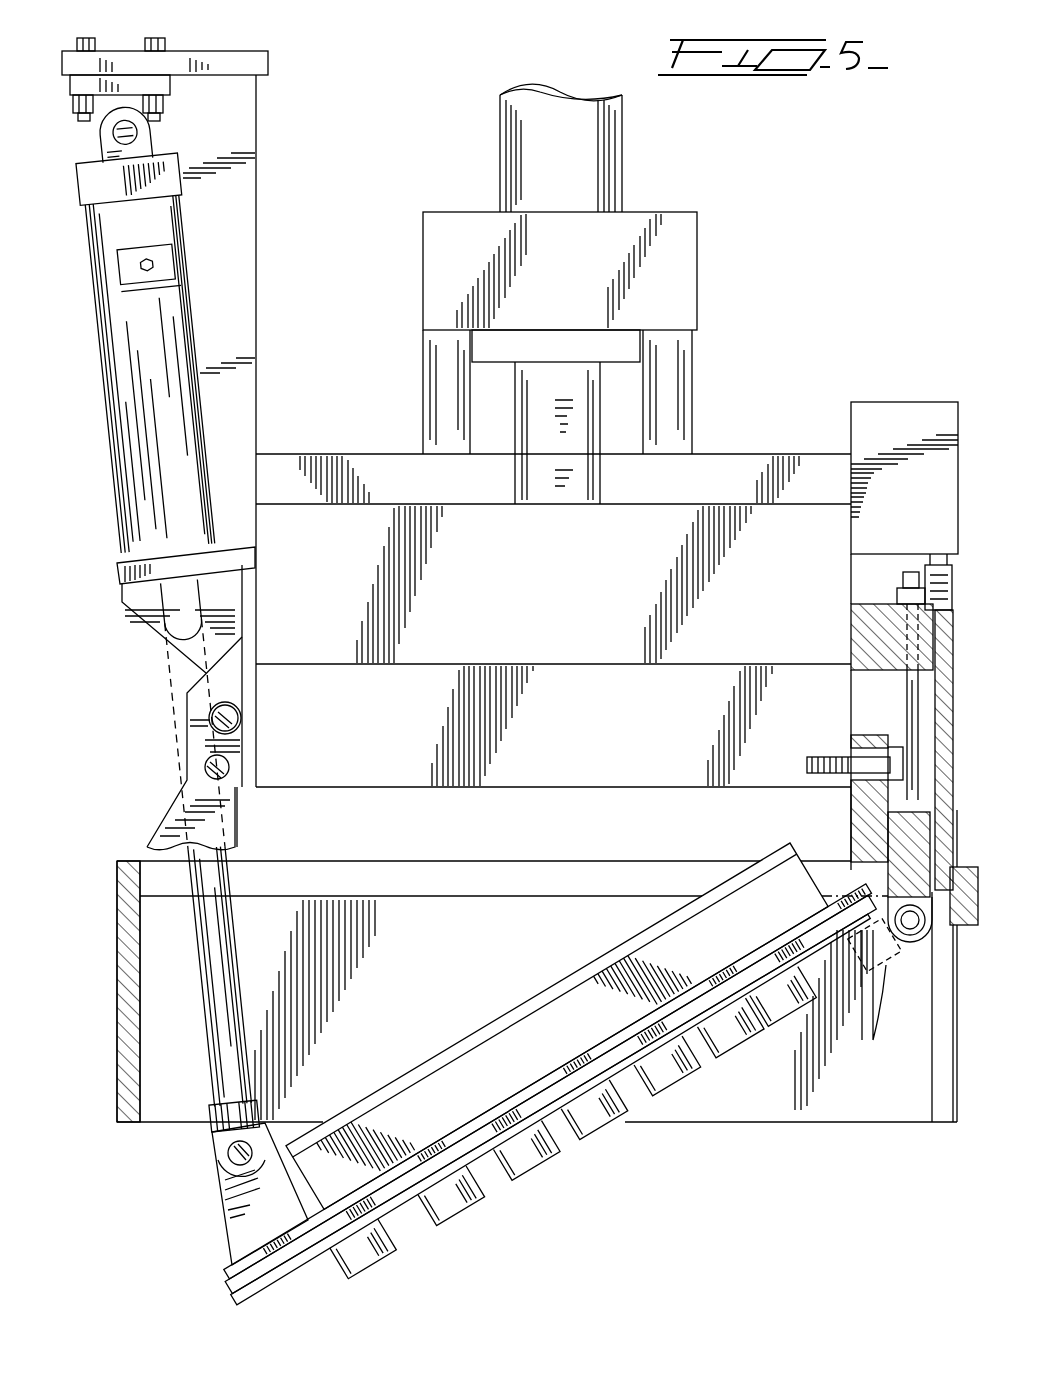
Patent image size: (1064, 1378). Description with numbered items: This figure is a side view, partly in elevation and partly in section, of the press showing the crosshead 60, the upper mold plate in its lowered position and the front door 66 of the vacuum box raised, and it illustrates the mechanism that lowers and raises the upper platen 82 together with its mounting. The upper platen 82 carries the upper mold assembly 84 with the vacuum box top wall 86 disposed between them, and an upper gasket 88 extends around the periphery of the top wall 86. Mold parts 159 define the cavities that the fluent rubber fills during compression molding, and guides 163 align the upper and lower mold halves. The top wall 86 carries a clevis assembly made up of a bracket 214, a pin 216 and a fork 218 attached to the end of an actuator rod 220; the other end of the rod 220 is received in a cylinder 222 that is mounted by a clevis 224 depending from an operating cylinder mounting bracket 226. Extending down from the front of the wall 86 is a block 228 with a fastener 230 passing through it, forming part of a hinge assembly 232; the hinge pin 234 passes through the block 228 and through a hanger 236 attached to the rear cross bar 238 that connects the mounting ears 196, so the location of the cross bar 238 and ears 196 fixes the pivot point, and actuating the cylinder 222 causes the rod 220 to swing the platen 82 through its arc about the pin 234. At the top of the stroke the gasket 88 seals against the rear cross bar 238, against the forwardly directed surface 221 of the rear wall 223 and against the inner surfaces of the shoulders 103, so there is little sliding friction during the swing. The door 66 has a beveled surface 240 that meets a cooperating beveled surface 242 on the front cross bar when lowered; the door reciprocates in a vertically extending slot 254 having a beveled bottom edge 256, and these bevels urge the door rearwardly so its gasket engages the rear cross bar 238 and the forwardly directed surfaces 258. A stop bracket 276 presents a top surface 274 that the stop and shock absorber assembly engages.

The crosshead 60 is at (569, 634).
The front door 66 is at (940, 706).
The upper platen 82 is at (488, 1068).
The upper mold assembly 84 is at (565, 1135).
The top wall 86 is at (250, 1300).
The upper gasket 88 is at (228, 1285).
The shoulders 103 is at (614, 872).
The mold parts 159 is at (475, 1215).
The guides 163 is at (556, 1195).
The mounting ears 196 is at (830, 766).
The bracket 214 is at (262, 1222).
The pin 216 is at (236, 1160).
The fork 218 is at (222, 1142).
The actuator rod 220 is at (212, 958).
The forwardly directed surface 221 is at (141, 1022).
The cylinder 222 is at (110, 340).
The rear wall 223 is at (126, 1046).
The clevis 224 is at (105, 128).
The operating cylinder mounting bracket 226 is at (135, 58).
The block 228 is at (860, 1020).
The fastener 230 is at (872, 1000).
The hinge assembly 232 is at (889, 980).
The hinge pin 234 is at (870, 868).
The hanger 236 is at (904, 916).
The rear cross bar 238 is at (882, 842).
The beveled surface 240 is at (912, 675).
The beveled surface 242 is at (891, 957).
The vertically extending slot 254 is at (955, 1118).
The beveled bottom edge 256 is at (952, 1100).
The forwardly directed surfaces 258 is at (932, 1040).
The top surface 274 is at (120, 567).
The stop bracket 276 is at (128, 578).